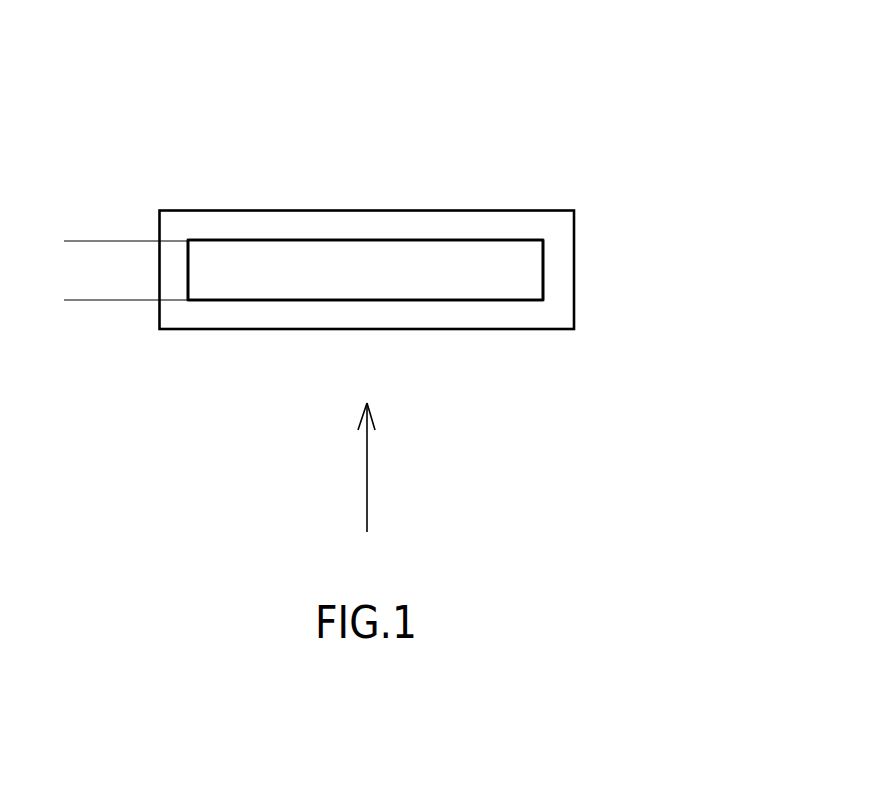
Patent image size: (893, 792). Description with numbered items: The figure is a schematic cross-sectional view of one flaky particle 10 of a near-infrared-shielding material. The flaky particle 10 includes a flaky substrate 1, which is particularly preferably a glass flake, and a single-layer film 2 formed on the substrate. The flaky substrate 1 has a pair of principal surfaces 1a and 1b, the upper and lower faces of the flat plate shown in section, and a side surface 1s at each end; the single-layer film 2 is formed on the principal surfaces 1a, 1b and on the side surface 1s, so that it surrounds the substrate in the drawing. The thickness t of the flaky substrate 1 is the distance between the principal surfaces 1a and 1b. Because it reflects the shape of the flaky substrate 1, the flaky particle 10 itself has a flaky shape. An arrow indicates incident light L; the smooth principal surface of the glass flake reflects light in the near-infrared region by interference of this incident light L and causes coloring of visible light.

The flaky particle 10 is at (496, 130).
The single-layer film 2 is at (558, 239).
The flaky substrate 1 is at (507, 263).
The principal surface 1a is at (327, 240).
The principal surface 1b is at (455, 300).
The side surface 1s is at (547, 284).
The thickness t is at (86, 241).
The incident light L is at (367, 460).